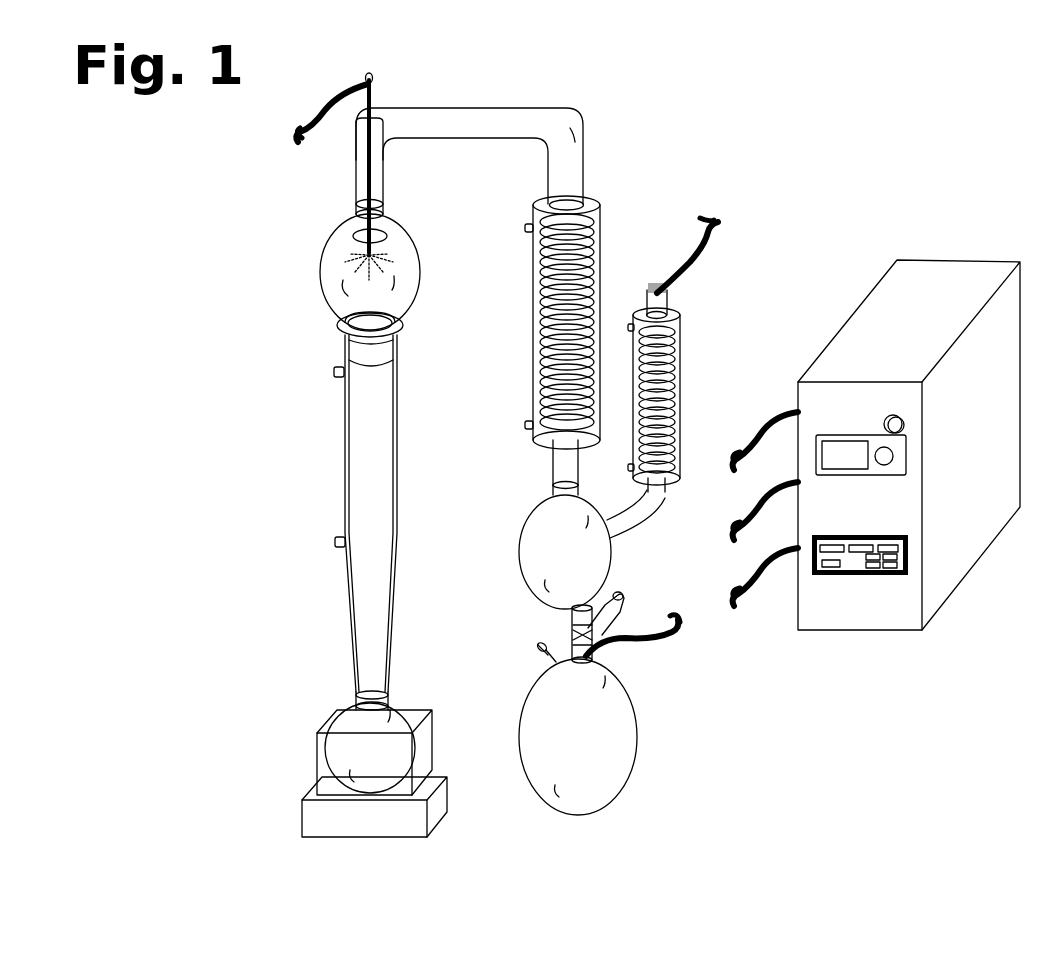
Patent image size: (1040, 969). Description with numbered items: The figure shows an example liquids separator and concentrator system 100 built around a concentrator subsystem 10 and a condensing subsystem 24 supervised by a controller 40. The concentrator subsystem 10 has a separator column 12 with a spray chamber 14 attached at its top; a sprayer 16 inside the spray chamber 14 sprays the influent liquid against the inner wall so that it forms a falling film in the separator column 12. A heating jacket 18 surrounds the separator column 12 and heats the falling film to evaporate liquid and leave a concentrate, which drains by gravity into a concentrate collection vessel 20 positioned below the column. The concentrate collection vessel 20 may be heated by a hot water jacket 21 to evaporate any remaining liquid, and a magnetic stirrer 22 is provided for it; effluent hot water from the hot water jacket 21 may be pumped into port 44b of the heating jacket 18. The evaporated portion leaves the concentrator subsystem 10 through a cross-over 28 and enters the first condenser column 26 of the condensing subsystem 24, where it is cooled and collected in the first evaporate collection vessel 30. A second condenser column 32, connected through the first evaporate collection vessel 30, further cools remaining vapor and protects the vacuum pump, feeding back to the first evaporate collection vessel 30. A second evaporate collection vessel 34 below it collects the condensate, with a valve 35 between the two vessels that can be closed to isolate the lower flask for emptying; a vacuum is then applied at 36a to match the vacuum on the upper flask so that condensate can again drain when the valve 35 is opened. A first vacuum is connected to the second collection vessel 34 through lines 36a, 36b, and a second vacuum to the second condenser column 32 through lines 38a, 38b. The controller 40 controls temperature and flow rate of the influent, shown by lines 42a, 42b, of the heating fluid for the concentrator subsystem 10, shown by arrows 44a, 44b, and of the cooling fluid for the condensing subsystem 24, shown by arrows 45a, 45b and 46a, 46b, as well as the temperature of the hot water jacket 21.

The liquids separator and concentrator system 100 is at (838, 168).
The concentrator subsystem 10 is at (212, 278).
The separator column 12 is at (253, 427).
The spray chamber 14 is at (322, 258).
The sprayer 16 is at (372, 256).
The heating jacket 18 is at (346, 484).
The concentrate collection vessel 20 is at (330, 730).
The hot water jacket 21 is at (317, 752).
The magnetic stirrer 22 is at (303, 787).
The condensing subsystem 24 is at (612, 178).
The first condenser column 26 is at (533, 358).
The cross-over 28 is at (500, 108).
The first evaporate collection vessel 30 is at (520, 536).
The second condenser column 32 is at (681, 350).
The second evaporate collection vessel 34 is at (532, 690).
The valve 35 is at (568, 632).
The vacuum line 36a is at (668, 640).
The vacuum line 36b is at (758, 585).
The vacuum line 38a is at (694, 258).
The vacuum line 38b is at (758, 516).
The controller 40 is at (848, 322).
The influent line 42a is at (330, 108).
The influent line 42b is at (768, 430).
The heating fluid arrow 44a is at (334, 372).
The heating fluid port 44b is at (333, 542).
The cooling fluid arrow 45a is at (525, 228).
The cooling fluid arrow 45b is at (523, 425).
The cooling fluid arrow 46a is at (610, 328).
The cooling fluid arrow 46b is at (626, 467).